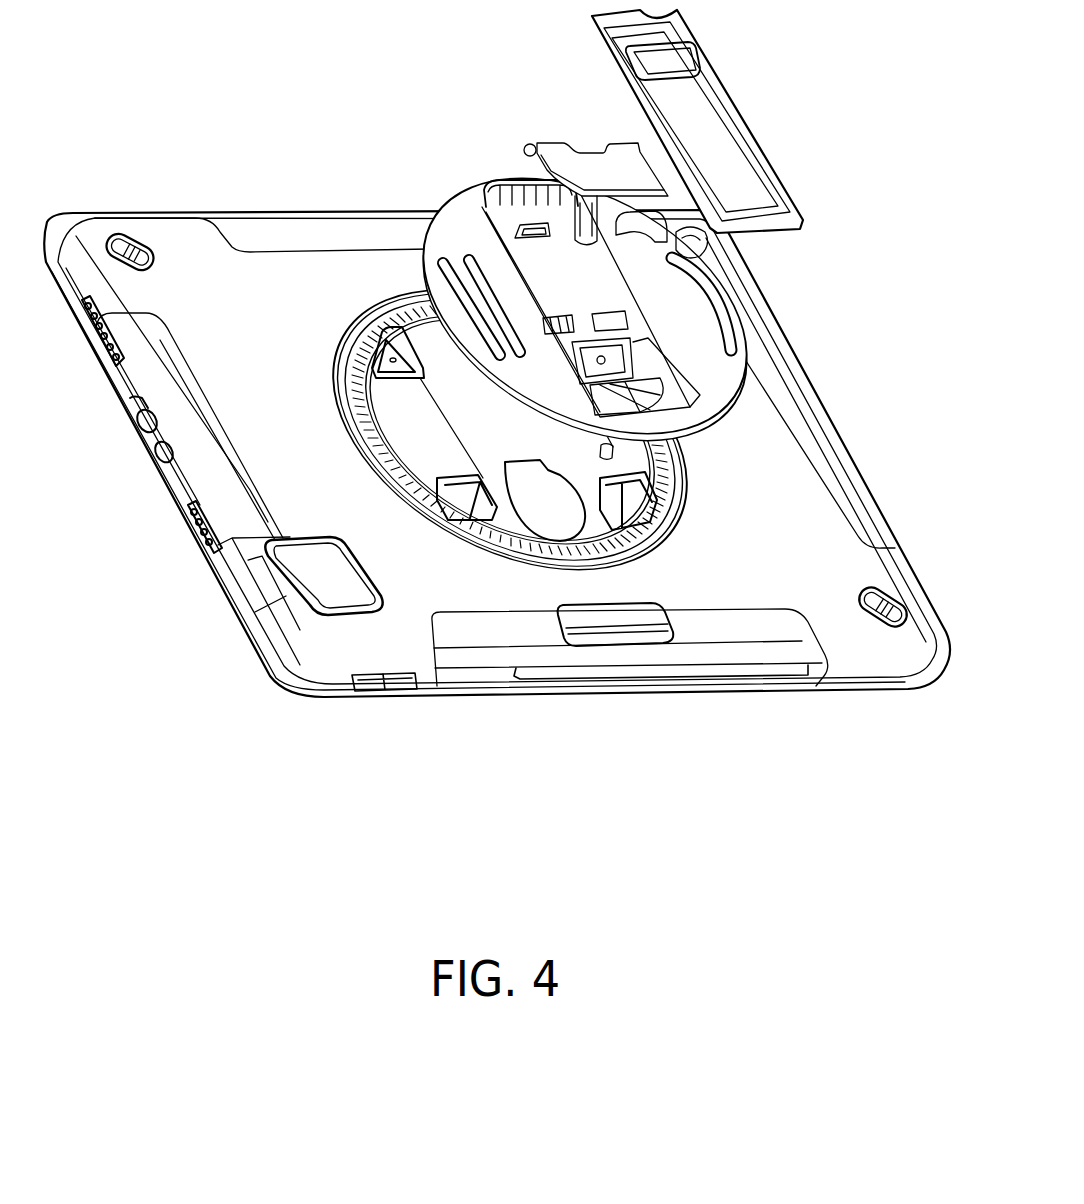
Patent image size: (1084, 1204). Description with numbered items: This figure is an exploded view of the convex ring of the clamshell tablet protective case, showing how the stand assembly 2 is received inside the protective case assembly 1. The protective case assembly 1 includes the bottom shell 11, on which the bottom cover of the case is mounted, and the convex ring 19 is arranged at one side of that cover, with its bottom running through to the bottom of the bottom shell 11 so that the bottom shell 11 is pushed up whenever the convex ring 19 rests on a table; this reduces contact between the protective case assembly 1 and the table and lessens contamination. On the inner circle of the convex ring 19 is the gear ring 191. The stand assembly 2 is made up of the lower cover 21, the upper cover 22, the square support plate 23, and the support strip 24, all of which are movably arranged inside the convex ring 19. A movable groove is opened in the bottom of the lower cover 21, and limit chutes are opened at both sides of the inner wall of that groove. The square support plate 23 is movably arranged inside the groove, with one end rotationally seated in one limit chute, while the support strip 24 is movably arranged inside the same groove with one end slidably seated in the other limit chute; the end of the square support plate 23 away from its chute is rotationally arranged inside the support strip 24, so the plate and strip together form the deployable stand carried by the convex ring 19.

The protective case assembly 1 is at (505, 419).
The bottom shell 11 is at (730, 583).
The convex ring 19 is at (337, 347).
The gear ring 191 is at (383, 297).
The stand assembly 2 is at (740, 134).
The lower cover 21 is at (713, 373).
The upper cover 22 is at (598, 525).
The square support plate 23 is at (623, 183).
The support strip 24 is at (727, 163).